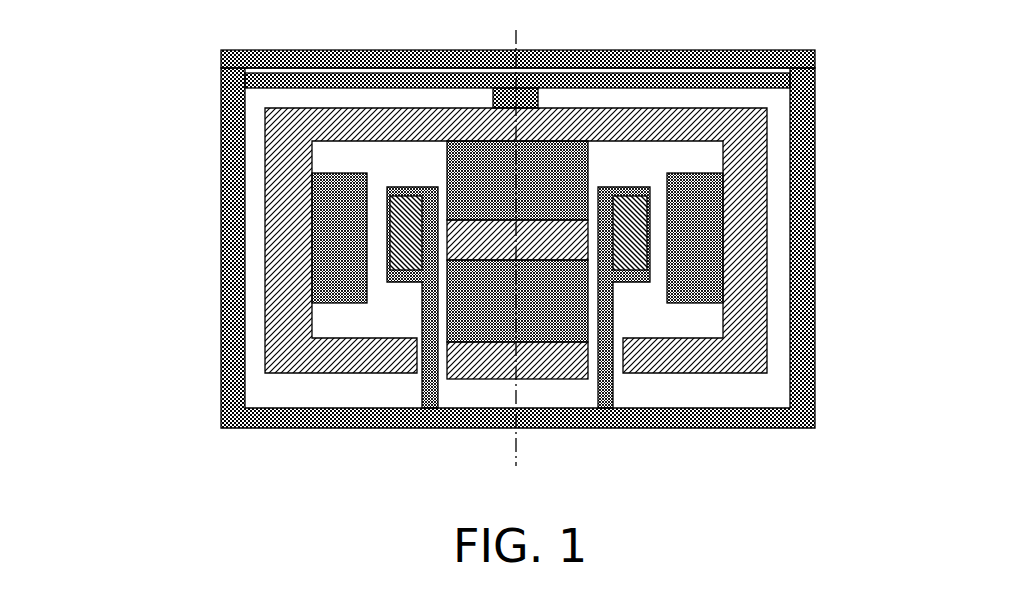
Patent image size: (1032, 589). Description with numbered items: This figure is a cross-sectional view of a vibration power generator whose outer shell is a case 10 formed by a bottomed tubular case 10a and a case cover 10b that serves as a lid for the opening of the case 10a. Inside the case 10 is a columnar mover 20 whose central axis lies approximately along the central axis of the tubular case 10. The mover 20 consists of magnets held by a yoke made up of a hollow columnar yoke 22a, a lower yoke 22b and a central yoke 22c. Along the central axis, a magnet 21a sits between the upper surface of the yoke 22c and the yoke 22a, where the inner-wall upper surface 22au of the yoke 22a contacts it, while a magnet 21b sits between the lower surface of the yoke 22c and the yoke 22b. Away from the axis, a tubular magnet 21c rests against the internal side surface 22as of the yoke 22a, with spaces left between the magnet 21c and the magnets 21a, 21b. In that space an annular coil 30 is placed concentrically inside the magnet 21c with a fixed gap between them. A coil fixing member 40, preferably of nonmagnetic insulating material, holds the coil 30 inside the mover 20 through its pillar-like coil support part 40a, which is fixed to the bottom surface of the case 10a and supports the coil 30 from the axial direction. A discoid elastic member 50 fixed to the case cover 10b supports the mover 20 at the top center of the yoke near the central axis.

The case 10 is at (421, 214).
The bottomed tubular case 10a is at (233, 108).
The case cover 10b is at (233, 52).
The mover 20 is at (512, 241).
The magnet 21a is at (567, 183).
The magnet 21b is at (575, 298).
The tubular magnet 21c is at (310, 268).
The yoke 22a is at (512, 241).
The internal side surface 22as is at (270, 162).
The inner-wall upper surface 22au is at (613, 130).
The yoke 22b is at (503, 363).
The yoke 22c is at (495, 238).
The coil 30 is at (388, 213).
The coil fixing member 40 is at (508, 296).
The coil support part 40a is at (420, 384).
The elastic member 50 is at (760, 82).